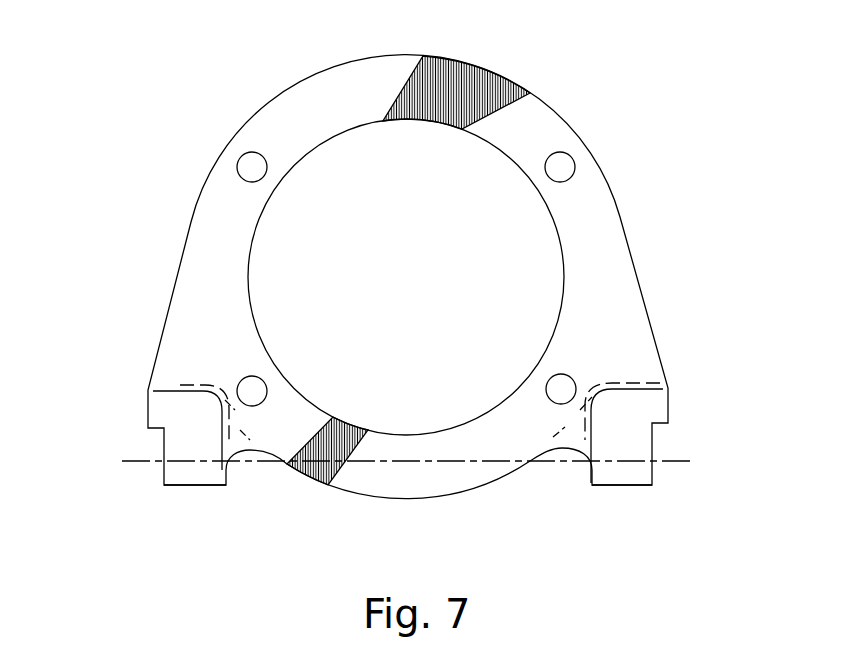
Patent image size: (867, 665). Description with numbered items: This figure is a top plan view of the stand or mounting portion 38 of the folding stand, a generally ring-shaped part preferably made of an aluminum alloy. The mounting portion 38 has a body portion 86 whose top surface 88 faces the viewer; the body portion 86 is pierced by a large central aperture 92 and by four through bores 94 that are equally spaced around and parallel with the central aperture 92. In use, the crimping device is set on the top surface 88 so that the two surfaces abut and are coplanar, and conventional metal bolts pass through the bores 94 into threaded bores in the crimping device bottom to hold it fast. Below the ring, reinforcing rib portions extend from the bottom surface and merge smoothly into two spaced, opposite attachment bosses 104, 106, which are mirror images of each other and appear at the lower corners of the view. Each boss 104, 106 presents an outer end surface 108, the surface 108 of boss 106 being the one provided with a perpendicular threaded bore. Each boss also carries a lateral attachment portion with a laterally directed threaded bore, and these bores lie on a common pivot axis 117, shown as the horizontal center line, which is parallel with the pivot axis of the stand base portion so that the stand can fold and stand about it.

The stand or mounting portion 38 is at (116, 239).
The body portion 86 is at (618, 200).
The top surface 88 is at (455, 93).
The central aperture 92 is at (248, 270).
The through bores 94 is at (237, 167).
The attachment boss 104 is at (183, 470).
The attachment boss 106 is at (632, 478).
The outer end surface 108 is at (207, 487).
The common pivot axis 117 is at (678, 460).